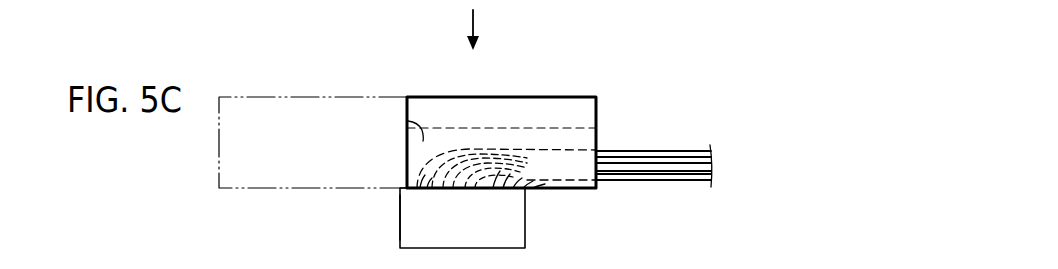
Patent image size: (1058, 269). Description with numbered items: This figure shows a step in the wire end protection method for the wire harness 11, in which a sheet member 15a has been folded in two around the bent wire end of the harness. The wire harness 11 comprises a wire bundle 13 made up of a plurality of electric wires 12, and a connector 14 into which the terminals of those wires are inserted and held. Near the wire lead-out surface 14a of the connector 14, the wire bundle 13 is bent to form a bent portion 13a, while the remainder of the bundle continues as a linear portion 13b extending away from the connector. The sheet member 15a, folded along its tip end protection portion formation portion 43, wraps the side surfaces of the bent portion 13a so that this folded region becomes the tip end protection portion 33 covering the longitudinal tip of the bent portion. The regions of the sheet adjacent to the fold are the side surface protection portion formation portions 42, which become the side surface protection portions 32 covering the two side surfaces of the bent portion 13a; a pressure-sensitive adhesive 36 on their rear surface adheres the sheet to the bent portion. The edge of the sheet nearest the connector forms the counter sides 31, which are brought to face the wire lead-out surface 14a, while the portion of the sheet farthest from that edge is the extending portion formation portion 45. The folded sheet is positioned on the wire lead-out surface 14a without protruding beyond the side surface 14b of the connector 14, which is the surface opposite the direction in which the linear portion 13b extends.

The wire harness 11 is at (702, 154).
The electric wires 12 is at (638, 173).
The wire bundle 13 is at (667, 140).
The bent portion 13a is at (476, 148).
The linear portion 13b is at (615, 182).
The connector 14 is at (411, 226).
The wire lead-out surface 14a is at (458, 188).
The side surface 14b is at (400, 200).
The sheet member 15a is at (573, 91).
The counter sides 31 is at (494, 188).
The side surface protection portions 32 is at (433, 172).
The side surface protection portion formation portions 42 is at (418, 160).
The tip end protection portion 33 is at (433, 160).
The tip end protection portion formation portion 43 is at (407, 145).
The pressure-sensitive adhesive 36 is at (407, 126).
The extending portion formation portion 45 is at (515, 108).